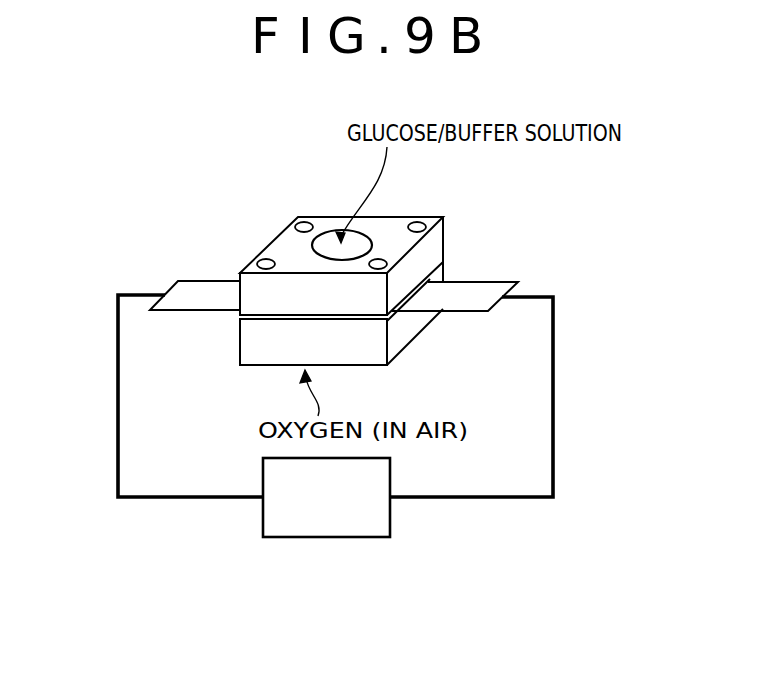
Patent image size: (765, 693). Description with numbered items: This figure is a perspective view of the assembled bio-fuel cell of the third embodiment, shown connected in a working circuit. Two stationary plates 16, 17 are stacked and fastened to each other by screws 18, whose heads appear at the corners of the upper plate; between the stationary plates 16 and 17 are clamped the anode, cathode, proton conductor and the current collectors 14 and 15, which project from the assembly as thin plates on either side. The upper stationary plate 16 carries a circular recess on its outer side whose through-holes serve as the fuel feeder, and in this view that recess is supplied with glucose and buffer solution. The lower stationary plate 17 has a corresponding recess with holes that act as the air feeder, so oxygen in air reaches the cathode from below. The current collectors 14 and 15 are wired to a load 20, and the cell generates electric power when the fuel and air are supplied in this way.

The current collector 14 is at (200, 291).
The current collector 15 is at (485, 292).
The stationary plate 16 is at (433, 253).
The stationary plate 17 is at (260, 345).
The screw 18 is at (302, 221).
The external load 20 is at (332, 520).